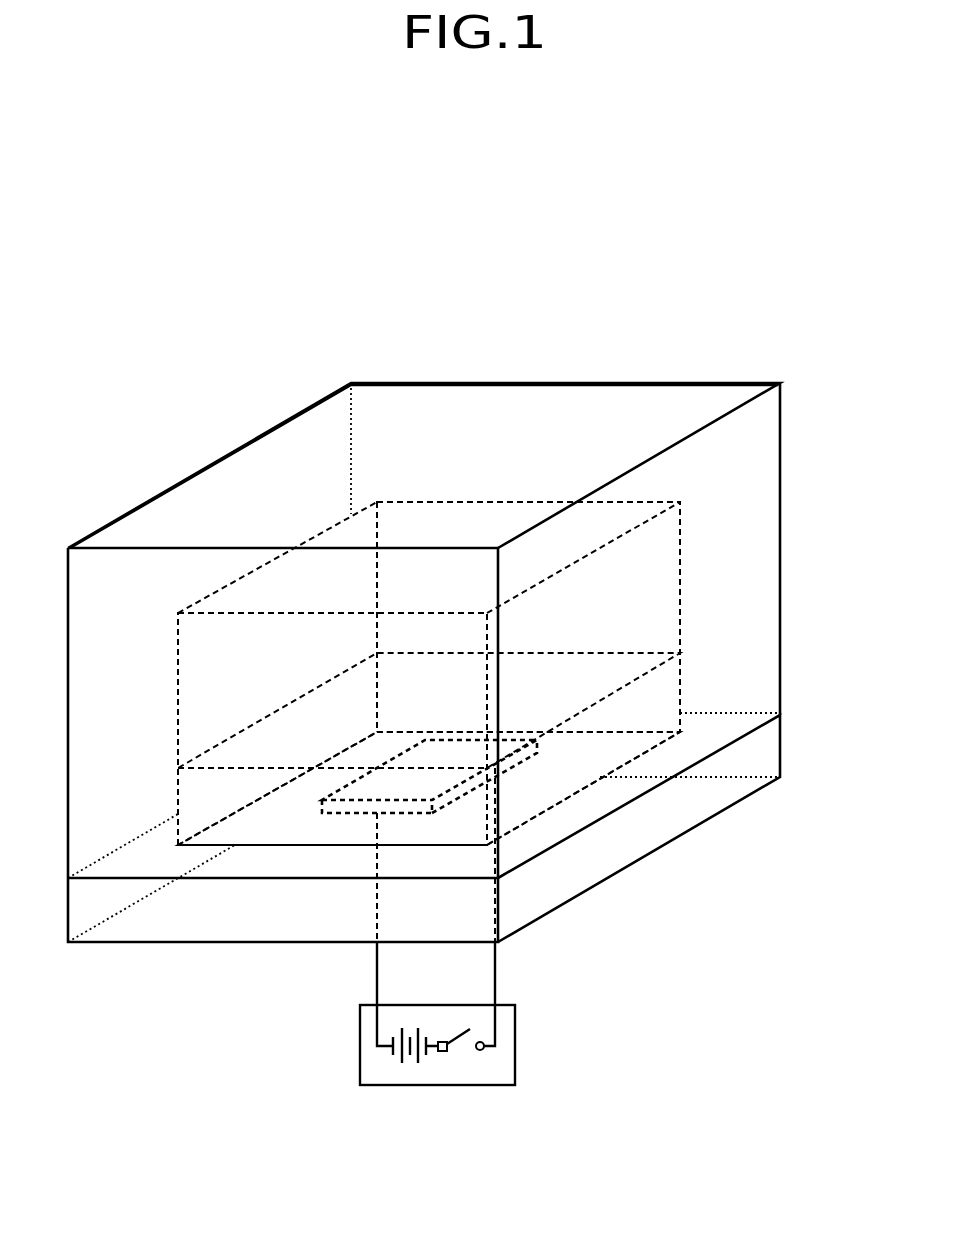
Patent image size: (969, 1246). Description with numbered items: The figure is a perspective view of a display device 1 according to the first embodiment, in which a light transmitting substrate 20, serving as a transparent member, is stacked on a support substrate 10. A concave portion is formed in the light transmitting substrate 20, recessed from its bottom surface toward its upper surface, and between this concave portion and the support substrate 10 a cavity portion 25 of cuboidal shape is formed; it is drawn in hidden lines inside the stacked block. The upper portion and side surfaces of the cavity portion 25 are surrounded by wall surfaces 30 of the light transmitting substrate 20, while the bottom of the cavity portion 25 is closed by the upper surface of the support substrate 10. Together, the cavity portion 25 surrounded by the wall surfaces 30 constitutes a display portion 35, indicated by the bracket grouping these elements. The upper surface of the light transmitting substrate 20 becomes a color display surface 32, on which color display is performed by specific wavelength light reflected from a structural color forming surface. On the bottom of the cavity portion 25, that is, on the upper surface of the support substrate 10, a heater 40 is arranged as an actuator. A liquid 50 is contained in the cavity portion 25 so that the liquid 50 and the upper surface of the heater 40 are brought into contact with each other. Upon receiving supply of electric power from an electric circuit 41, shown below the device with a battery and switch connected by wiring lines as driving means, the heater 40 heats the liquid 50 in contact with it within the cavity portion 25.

The display device 1 is at (619, 961).
The support substrate 10 is at (707, 822).
The light transmitting substrate 20 is at (781, 487).
The cavity portion 25 is at (663, 577).
The wall surfaces 30 is at (685, 622).
The color display surface 32 is at (594, 410).
The display portion 35 is at (850, 475).
The heater 40 is at (502, 770).
The electric circuit 41 is at (516, 1070).
The liquid 50 is at (640, 680).